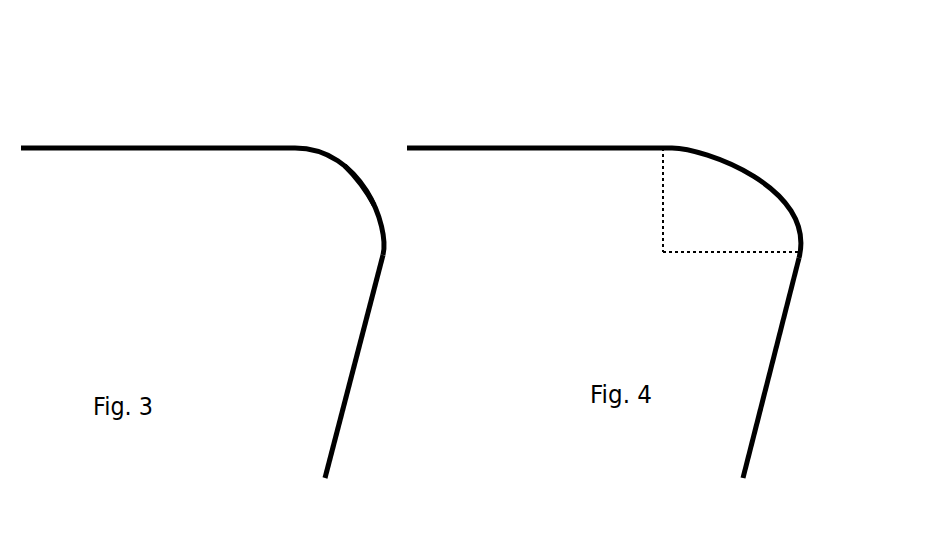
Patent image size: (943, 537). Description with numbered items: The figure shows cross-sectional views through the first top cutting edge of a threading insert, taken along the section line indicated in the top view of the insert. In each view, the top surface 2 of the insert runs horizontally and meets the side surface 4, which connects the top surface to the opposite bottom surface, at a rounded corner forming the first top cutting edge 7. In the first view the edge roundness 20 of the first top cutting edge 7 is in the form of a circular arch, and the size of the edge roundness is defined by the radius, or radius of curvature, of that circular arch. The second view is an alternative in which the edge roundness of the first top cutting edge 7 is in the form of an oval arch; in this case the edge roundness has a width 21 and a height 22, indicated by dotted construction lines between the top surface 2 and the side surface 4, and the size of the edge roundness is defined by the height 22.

In FIG. 3, the top surface 2 is at (167, 146).
In FIG. 4, the top surface 2 is at (533, 145).
In FIG. 3, the first top cutting edge 7 is at (345, 163).
In FIG. 4, the first top cutting edge 7 is at (770, 182).
In FIG. 3, the side surface 4 is at (347, 405).
In FIG. 4, the side surface 4 is at (773, 375).
In FIG. 3, the edge roundness 20 is at (362, 187).
In FIG. 4, the width 21 is at (730, 280).
In FIG. 4, the height 22 is at (638, 200).